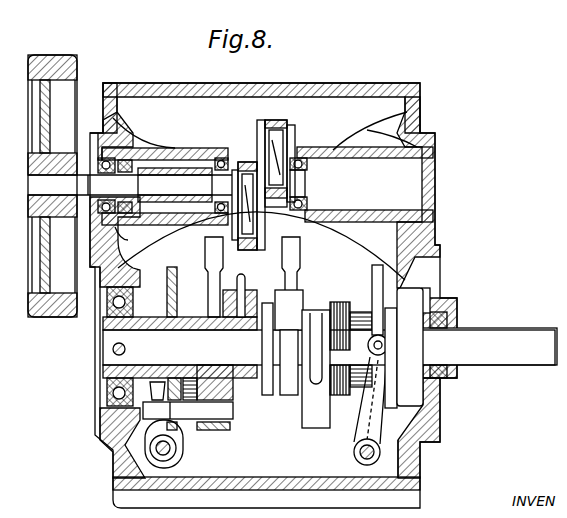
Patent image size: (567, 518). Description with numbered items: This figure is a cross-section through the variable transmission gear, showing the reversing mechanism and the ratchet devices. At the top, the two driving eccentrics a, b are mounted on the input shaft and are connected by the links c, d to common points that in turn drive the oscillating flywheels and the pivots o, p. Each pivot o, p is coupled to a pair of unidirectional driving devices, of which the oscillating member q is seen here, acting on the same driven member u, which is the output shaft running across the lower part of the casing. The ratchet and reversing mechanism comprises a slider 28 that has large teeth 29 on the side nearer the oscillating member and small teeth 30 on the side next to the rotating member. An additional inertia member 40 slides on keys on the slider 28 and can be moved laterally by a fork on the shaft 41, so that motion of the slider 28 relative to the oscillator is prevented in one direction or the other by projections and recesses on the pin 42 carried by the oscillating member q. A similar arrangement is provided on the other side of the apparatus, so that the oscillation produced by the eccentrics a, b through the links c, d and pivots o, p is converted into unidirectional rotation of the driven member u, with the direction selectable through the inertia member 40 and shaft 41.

The driving eccentric a is at (273, 175).
The driving eccentric b is at (233, 172).
The link c is at (270, 124).
The link d is at (241, 170).
The pivot o is at (215, 250).
The pivot p is at (290, 248).
The unidirectional driving device q is at (217, 390).
The driven member u is at (103, 337).
The slider 28 is at (180, 320).
The large teeth 29 is at (196, 374).
The small teeth 30 is at (133, 378).
The inertia member 40 is at (170, 280).
The shaft 41 is at (176, 449).
The pin 42 is at (188, 416).